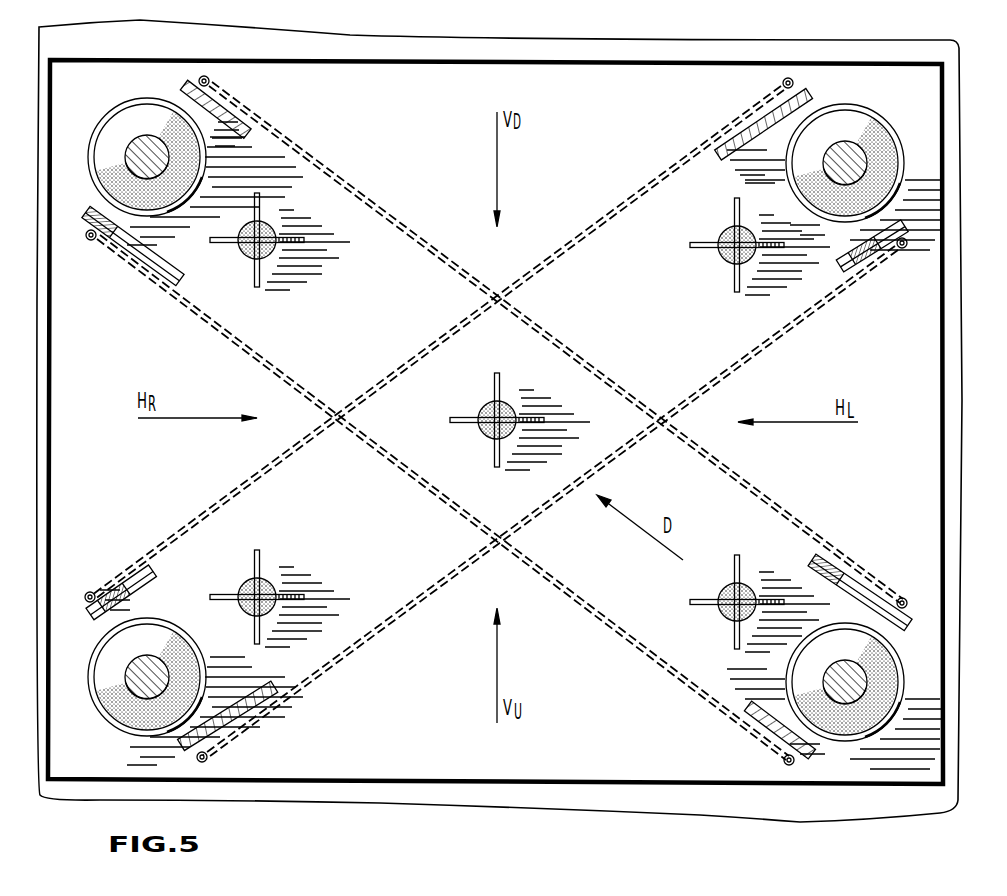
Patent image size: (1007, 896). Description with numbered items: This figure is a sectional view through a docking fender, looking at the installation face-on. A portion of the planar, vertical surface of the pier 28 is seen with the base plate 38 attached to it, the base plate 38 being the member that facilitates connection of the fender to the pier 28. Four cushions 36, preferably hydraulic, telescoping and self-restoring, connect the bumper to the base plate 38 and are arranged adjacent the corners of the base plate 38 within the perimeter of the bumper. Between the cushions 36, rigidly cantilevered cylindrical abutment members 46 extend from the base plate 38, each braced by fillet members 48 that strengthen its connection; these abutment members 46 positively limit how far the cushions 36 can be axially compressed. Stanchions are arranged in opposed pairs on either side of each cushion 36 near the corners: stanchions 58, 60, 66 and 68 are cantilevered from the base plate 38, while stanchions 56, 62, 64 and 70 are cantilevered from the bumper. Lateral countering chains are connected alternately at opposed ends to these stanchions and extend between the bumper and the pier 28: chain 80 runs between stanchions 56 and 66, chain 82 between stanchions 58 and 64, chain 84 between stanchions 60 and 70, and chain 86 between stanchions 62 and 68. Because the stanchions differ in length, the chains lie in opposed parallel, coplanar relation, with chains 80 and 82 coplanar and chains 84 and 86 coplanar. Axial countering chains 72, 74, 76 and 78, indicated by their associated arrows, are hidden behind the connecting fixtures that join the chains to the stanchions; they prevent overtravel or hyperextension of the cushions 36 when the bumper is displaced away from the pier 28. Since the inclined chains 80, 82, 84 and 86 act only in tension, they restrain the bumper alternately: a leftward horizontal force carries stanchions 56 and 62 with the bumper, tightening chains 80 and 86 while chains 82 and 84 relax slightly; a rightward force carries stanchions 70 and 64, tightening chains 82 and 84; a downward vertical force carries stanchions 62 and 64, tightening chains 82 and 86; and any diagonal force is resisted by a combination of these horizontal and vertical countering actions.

The pier 28 is at (491, 57).
The base plate 38 is at (421, 143).
The cushions 36 is at (98, 122).
The abutment members 46 is at (268, 223).
The fillet members 48 is at (290, 245).
The stanchion 56 is at (243, 133).
The stanchion 58 is at (177, 284).
The stanchion 60 is at (158, 574).
The stanchion 62 is at (262, 688).
The stanchion 64 is at (760, 708).
The stanchion 66 is at (835, 580).
The stanchion 68 is at (850, 258).
The stanchion 70 is at (723, 162).
The axial countering chain 72 is at (210, 75).
The axial countering chain 74 is at (212, 764).
The axial countering chain 76 is at (782, 765).
The axial countering chain 78 is at (795, 77).
The lateral countering chain 80 is at (428, 247).
The lateral countering chain 82 is at (293, 365).
The lateral countering chain 84 is at (597, 222).
The lateral countering chain 86 is at (757, 362).